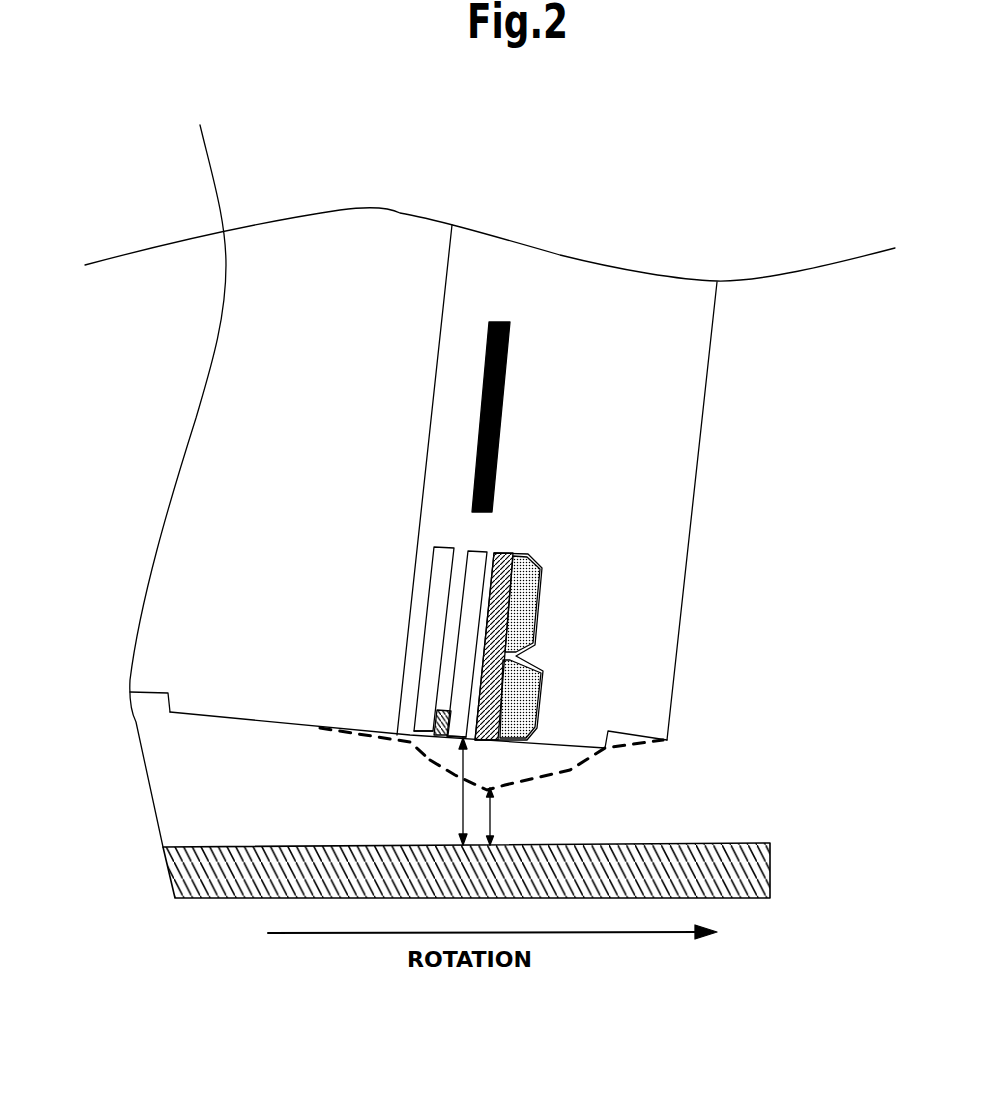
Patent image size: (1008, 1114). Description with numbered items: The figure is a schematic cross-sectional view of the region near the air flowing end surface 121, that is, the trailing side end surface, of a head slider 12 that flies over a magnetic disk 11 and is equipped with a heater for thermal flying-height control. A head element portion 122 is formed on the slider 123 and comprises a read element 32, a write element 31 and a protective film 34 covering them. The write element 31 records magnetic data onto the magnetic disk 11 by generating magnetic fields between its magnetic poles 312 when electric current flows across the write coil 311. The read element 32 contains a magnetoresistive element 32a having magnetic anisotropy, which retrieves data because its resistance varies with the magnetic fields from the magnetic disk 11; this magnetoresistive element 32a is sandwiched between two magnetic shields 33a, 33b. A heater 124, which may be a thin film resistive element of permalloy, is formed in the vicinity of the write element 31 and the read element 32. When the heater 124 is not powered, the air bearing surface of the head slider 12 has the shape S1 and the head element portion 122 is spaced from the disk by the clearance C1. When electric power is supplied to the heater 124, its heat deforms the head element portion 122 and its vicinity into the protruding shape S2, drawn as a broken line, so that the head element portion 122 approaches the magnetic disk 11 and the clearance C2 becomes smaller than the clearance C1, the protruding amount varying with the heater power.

The magnetic disk 11 is at (694, 843).
The head slider 12 is at (532, 215).
The air flowing end surface 121 is at (710, 375).
The head element portion 122 is at (754, 511).
The slider 123 is at (130, 713).
The heater 124 is at (500, 432).
The write element 31 is at (665, 646).
The write coil 311 is at (540, 568).
The magnetic poles 312 is at (540, 695).
The read element 32 is at (430, 738).
The magnetoresistive element 32a is at (440, 740).
The magnetic shield 33a is at (477, 550).
The magnetic shield 33b is at (415, 587).
The protective film 34 is at (460, 312).
The shape of the ABS in non-heating S1 is at (373, 737).
The protruding shape in heating S2 is at (577, 772).
The clearance in non-heating C1 is at (445, 791).
The clearance in heating C2 is at (516, 816).